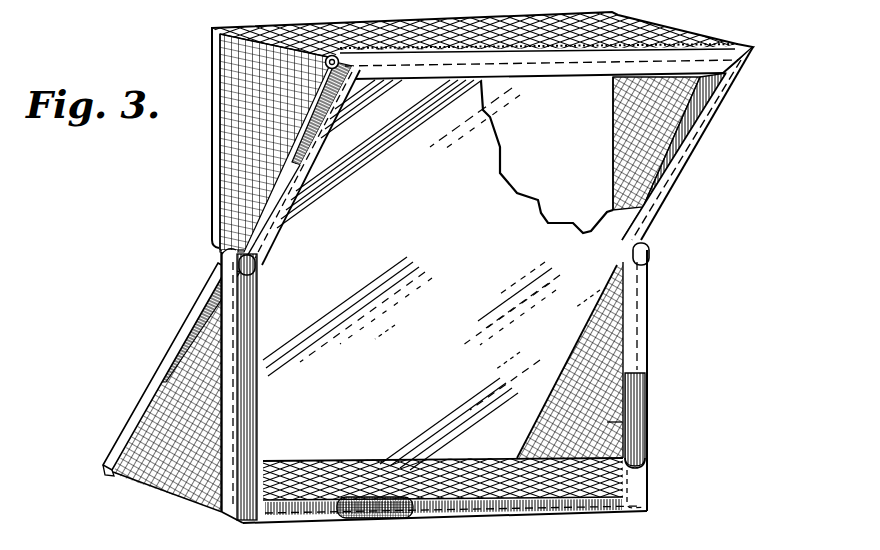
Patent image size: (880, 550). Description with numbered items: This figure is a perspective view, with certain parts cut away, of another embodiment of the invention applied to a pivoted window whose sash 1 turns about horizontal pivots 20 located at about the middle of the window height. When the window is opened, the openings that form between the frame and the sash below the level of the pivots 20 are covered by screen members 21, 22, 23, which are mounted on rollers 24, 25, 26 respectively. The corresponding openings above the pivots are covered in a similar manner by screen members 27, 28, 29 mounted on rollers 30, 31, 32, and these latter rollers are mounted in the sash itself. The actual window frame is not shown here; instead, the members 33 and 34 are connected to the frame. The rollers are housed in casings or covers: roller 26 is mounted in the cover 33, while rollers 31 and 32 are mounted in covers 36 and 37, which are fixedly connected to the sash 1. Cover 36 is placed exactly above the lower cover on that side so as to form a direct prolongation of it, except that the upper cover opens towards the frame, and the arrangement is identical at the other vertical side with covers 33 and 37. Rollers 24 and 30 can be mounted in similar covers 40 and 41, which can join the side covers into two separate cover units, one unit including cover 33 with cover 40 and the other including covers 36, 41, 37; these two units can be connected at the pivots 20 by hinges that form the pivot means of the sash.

The sash 1 is at (160, 372).
The horizontal pivots 20 is at (650, 255).
The screen member 21 is at (480, 493).
The screen member 22 is at (170, 477).
The screen member 23 is at (647, 437).
The roller 24 is at (373, 518).
The roller 25 is at (223, 503).
The roller 26 is at (643, 450).
The screen member 27 is at (212, 45).
The screen member 28 is at (218, 73).
The screen member 29 is at (682, 130).
The roller 30 is at (722, 42).
The roller 31 is at (307, 155).
The roller 32 is at (718, 102).
The casing or cover 33 is at (647, 403).
The frame-connected member 34 is at (217, 181).
The casing or cover 36 is at (335, 83).
The casing or cover 37 is at (657, 173).
The cover 40 is at (568, 507).
The cover 41 is at (673, 60).